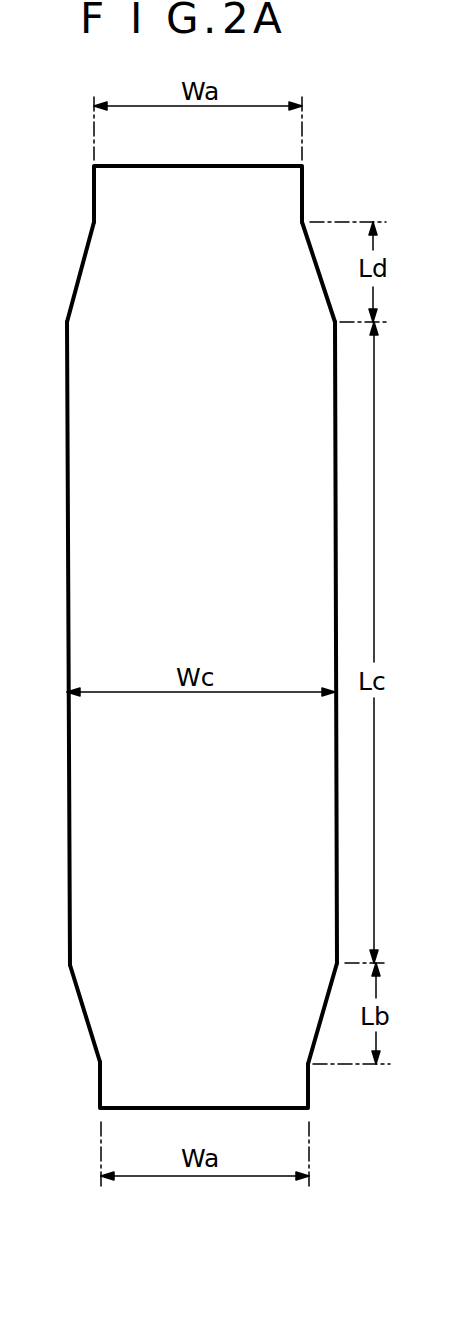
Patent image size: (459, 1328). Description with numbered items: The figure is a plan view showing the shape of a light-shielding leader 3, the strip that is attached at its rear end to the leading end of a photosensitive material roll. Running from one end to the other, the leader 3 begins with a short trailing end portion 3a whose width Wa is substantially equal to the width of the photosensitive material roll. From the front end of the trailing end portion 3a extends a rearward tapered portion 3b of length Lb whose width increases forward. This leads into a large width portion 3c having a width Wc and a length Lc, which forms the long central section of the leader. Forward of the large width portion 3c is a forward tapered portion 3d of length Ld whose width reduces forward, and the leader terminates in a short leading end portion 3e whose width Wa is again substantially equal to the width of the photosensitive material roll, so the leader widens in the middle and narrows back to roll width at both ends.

The light-shielding leader 3 is at (212, 536).
The trailing end portion 3a is at (140, 1088).
The rearward tapered portion 3b is at (115, 1000).
The large width portion 3c is at (125, 595).
The forward tapered portion 3d is at (128, 272).
The leading end portion 3e is at (276, 181).